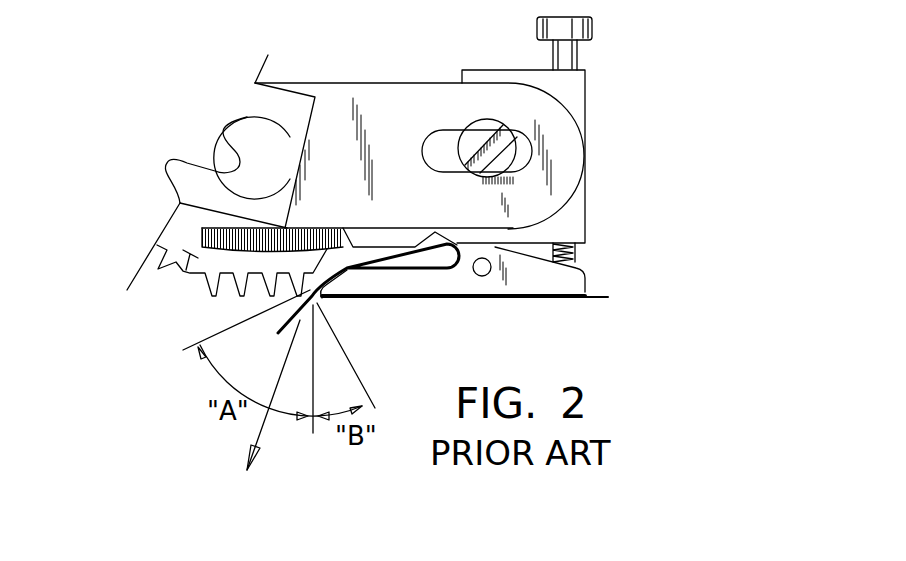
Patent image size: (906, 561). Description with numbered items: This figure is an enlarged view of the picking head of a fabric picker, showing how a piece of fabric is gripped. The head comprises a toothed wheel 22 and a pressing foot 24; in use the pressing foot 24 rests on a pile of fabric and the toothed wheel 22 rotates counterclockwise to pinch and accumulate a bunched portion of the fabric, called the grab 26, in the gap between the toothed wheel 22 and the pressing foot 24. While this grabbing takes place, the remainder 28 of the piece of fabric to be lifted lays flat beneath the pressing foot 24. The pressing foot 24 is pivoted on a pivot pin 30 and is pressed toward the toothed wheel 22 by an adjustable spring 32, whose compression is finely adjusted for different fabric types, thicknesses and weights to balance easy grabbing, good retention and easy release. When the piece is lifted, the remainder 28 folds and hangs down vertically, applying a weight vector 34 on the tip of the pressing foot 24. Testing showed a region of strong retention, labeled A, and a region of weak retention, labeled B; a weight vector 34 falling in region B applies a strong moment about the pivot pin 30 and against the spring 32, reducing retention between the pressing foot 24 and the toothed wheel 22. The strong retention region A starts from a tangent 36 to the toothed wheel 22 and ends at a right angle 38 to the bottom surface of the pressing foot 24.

The toothed wheel 22 is at (180, 263).
The pressing foot 24 is at (397, 284).
The grab 26 is at (433, 262).
The remainder of the piece of fabric material 28 is at (555, 298).
The pivot pin 30 is at (484, 276).
The adjustable spring 32 is at (573, 260).
The weight vector 34 is at (257, 427).
The tangent 36 is at (185, 352).
The right angle 38 is at (315, 432).